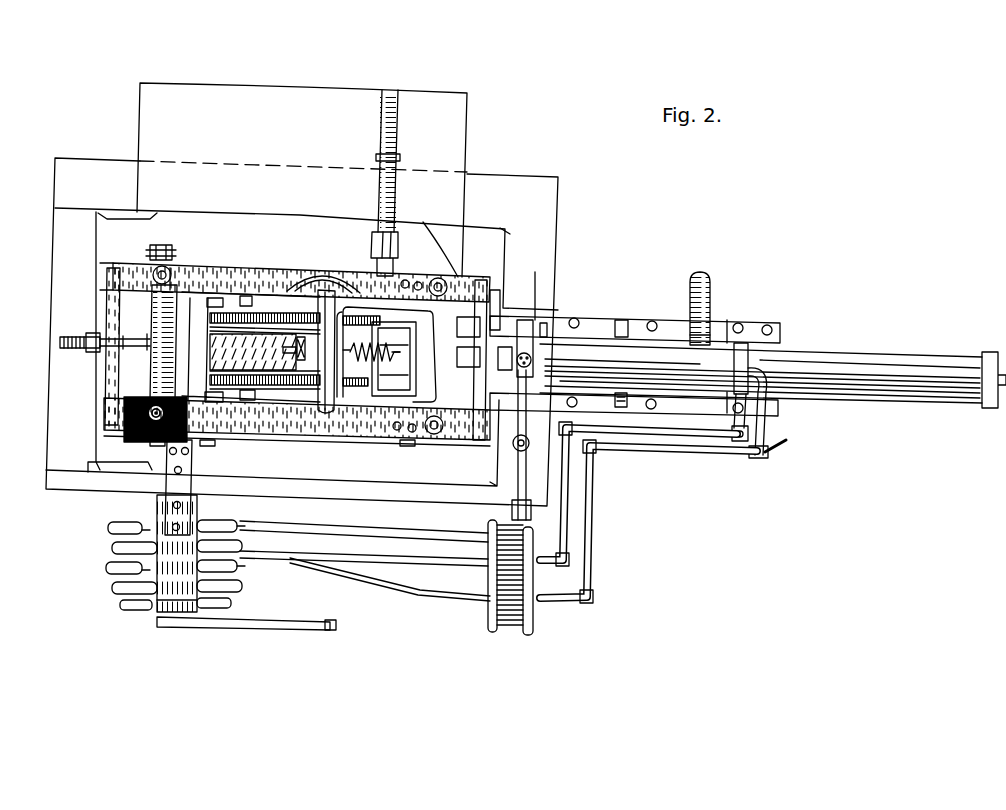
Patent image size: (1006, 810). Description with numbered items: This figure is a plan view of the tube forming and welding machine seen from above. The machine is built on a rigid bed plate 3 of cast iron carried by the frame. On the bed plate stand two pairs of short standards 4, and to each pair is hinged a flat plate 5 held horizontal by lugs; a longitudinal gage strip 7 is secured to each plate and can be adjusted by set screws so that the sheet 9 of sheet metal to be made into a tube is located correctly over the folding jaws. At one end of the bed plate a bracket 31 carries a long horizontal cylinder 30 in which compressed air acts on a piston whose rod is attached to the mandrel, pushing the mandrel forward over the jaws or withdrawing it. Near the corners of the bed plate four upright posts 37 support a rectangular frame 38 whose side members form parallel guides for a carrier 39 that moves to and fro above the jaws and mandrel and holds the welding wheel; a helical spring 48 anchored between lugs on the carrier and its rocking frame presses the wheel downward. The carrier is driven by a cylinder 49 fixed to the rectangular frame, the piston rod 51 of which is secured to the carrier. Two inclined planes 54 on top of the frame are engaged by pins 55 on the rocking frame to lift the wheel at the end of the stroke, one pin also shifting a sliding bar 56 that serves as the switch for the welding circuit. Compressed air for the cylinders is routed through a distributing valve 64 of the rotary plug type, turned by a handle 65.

The bed plate 3 is at (48, 279).
The standards 4 is at (207, 300).
The flat plate 5 is at (209, 311).
The gage strip 7 is at (210, 326).
The sheet 9 is at (212, 349).
The cylinder 30 is at (860, 353).
The bracket 31 is at (641, 318).
The upright posts 37 is at (152, 268).
The rectangular frame 38 is at (237, 268).
The carrier 39 is at (330, 296).
The helical spring 48 is at (394, 359).
The cylinder 49 is at (598, 345).
The piston rod 51 is at (492, 358).
The inclined planes 54 is at (410, 278).
The pins 55 is at (383, 413).
The sliding bar 56 is at (300, 437).
The distributing valve 64 is at (168, 596).
The handle 65 is at (240, 620).